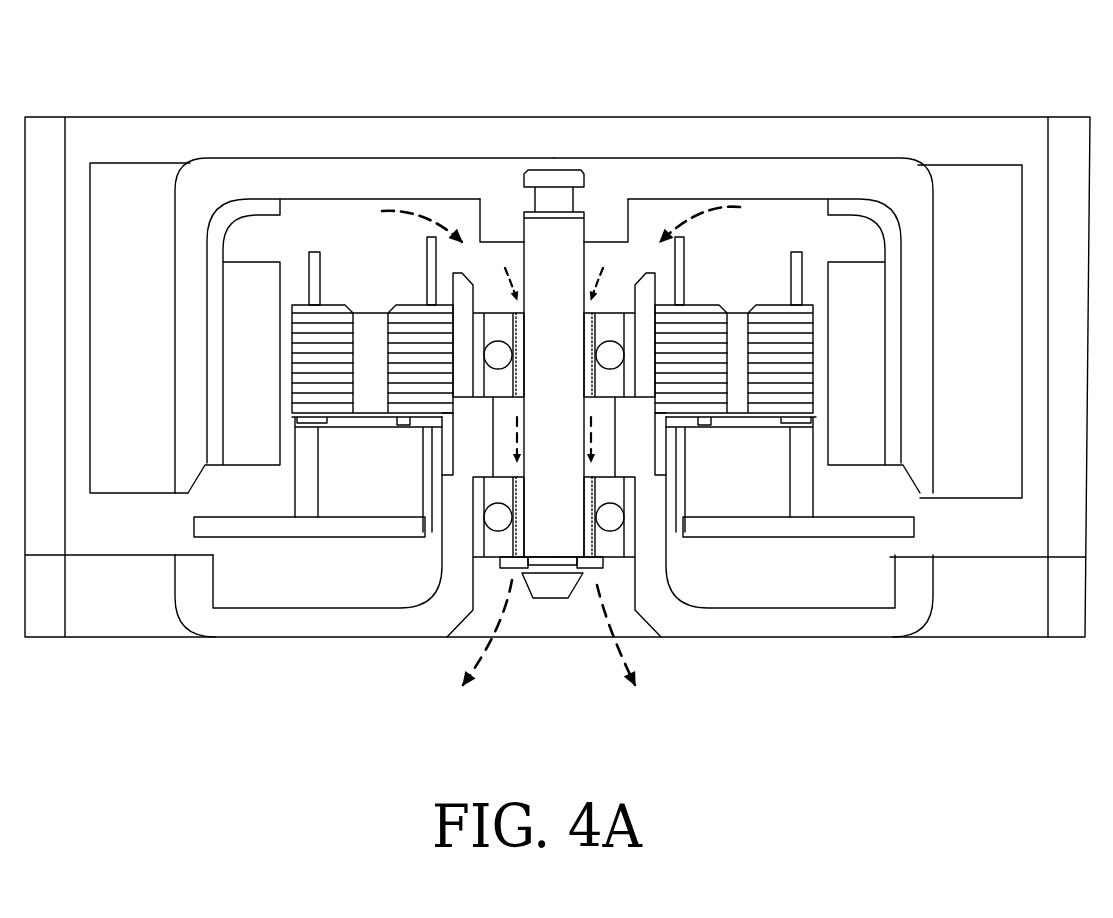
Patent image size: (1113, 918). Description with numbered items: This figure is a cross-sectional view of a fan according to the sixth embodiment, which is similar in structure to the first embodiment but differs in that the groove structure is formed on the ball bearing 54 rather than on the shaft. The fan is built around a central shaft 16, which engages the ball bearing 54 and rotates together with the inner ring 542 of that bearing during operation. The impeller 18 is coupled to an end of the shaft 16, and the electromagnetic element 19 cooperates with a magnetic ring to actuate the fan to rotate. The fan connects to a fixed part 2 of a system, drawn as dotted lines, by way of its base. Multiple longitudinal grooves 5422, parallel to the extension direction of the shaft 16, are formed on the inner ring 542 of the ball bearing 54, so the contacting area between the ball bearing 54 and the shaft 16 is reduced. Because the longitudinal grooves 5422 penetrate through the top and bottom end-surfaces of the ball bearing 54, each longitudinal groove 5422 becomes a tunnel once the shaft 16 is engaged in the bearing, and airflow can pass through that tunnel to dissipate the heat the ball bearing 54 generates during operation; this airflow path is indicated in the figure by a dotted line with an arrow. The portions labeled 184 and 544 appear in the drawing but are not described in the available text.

The fixed part 2 is at (662, 597).
The shaft 16 is at (553, 240).
The impeller 18 is at (893, 158).
The electromagnetic element 19 is at (408, 305).
The ball bearing 54 is at (596, 326).
The top wall portion of housing 184 is at (498, 230).
The inner ring 542 is at (591, 300).
The bearing 544 is at (628, 313).
The longitudinal grooves 5422 is at (520, 557).